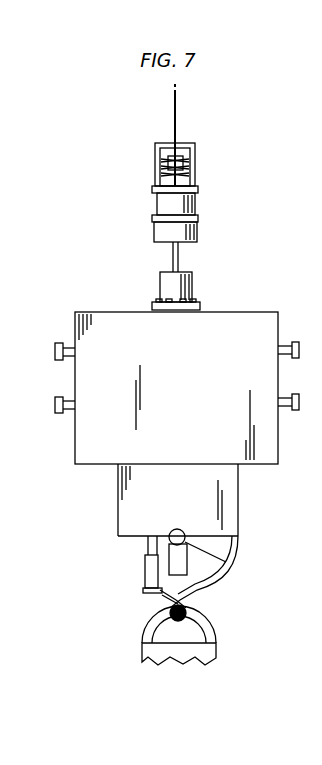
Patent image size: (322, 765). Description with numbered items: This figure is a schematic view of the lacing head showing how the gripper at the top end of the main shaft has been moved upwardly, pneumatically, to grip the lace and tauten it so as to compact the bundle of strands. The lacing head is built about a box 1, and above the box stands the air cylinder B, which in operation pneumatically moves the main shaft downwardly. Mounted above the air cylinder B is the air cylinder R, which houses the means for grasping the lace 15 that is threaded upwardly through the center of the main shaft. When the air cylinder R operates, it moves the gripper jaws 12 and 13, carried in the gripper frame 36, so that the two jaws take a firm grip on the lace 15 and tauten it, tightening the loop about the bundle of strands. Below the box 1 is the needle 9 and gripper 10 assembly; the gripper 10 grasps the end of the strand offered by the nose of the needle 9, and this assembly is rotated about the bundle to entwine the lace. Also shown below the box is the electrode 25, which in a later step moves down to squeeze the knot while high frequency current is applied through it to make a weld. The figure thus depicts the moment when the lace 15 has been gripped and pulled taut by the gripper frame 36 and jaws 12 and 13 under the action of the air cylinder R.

The lace 15 is at (176, 107).
The gripper frame 36 is at (193, 148).
The gripper jaw 13 is at (190, 170).
The gripper jaw 12 is at (162, 167).
The air cylinder R is at (200, 210).
The air cylinder B is at (194, 287).
The box 1 is at (263, 313).
The electrode 25 is at (169, 551).
The gripper 10 is at (145, 575).
The needle 9 is at (218, 576).